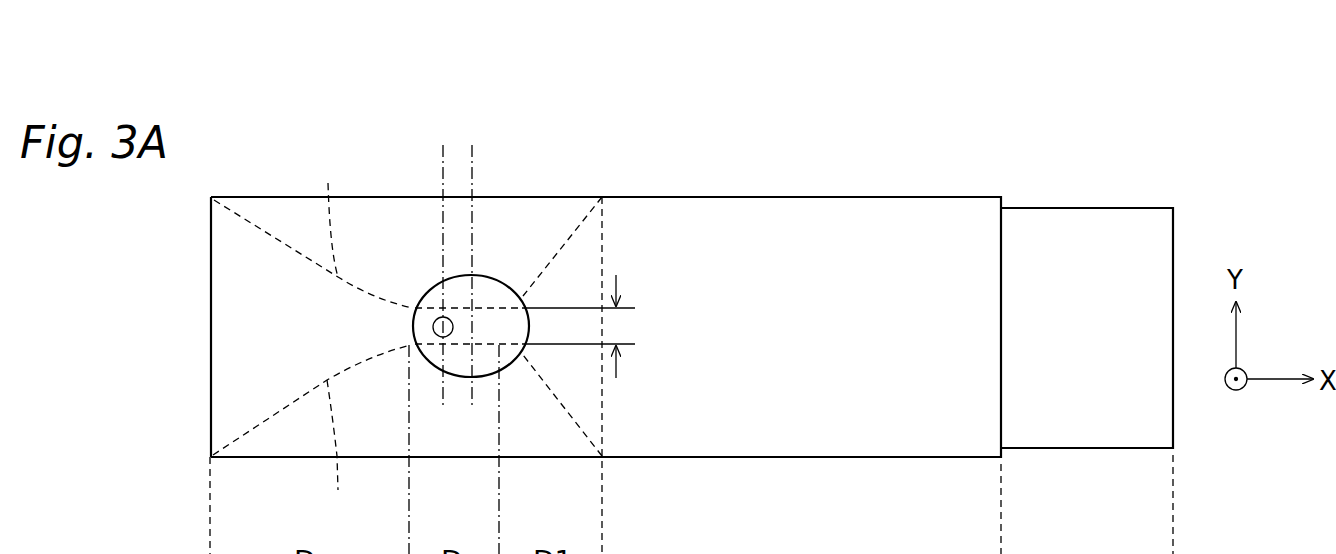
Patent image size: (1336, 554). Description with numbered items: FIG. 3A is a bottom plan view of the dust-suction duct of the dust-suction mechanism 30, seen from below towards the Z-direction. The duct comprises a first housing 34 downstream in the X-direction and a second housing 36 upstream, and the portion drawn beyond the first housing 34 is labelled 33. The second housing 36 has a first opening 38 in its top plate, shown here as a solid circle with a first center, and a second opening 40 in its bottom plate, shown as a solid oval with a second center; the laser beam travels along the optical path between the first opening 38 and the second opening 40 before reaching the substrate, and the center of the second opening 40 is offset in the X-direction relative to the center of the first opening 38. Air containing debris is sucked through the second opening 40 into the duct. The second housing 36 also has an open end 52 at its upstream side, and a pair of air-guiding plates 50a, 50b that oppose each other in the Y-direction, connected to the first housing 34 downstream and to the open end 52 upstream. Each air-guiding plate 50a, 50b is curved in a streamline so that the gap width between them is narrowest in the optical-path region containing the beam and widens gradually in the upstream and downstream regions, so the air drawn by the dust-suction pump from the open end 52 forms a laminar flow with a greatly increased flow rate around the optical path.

The dust-suction mechanism 30 is at (968, 145).
The connecting portion 33 is at (1080, 448).
The first housing 34 is at (755, 457).
The second housing 36 is at (250, 457).
The first opening 38 is at (437, 317).
The second opening 40 is at (507, 282).
The air-guiding plate 50a is at (330, 214).
The air-guiding plate 50b is at (338, 454).
The open end 52 is at (207, 322).